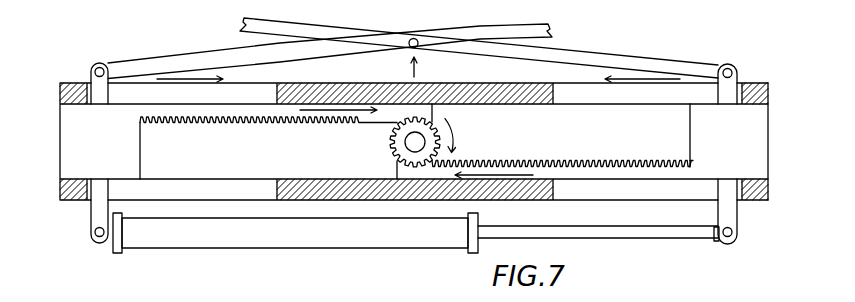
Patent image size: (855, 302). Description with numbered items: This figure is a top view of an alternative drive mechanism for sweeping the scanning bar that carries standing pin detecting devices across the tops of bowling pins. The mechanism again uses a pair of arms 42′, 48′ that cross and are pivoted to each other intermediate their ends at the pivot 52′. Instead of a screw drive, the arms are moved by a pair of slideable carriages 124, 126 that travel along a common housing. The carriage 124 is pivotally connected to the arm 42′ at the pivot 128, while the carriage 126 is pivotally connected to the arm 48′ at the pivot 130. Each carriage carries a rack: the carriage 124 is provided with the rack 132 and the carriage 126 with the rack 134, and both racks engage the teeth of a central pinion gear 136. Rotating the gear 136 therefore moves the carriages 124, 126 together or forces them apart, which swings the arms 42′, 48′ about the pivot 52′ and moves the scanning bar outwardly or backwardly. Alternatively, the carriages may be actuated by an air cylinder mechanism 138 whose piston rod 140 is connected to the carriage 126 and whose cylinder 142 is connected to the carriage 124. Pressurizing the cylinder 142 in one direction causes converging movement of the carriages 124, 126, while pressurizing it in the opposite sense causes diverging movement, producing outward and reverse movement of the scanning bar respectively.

The slideable carriage 124 is at (73, 145).
The slideable carriage 126 is at (767, 137).
The pivotal connection 128 is at (93, 62).
The pivotal connection 130 is at (730, 64).
The arm 42' is at (330, 53).
The arm 48' is at (479, 50).
The pivot 52' is at (432, 42).
The rack 132 is at (201, 123).
The rack 134 is at (548, 161).
The central pinion gear 136 is at (392, 143).
The air cylinder mechanism 138 is at (401, 249).
The piston rod 140 is at (599, 240).
The cylinder 142 is at (250, 247).